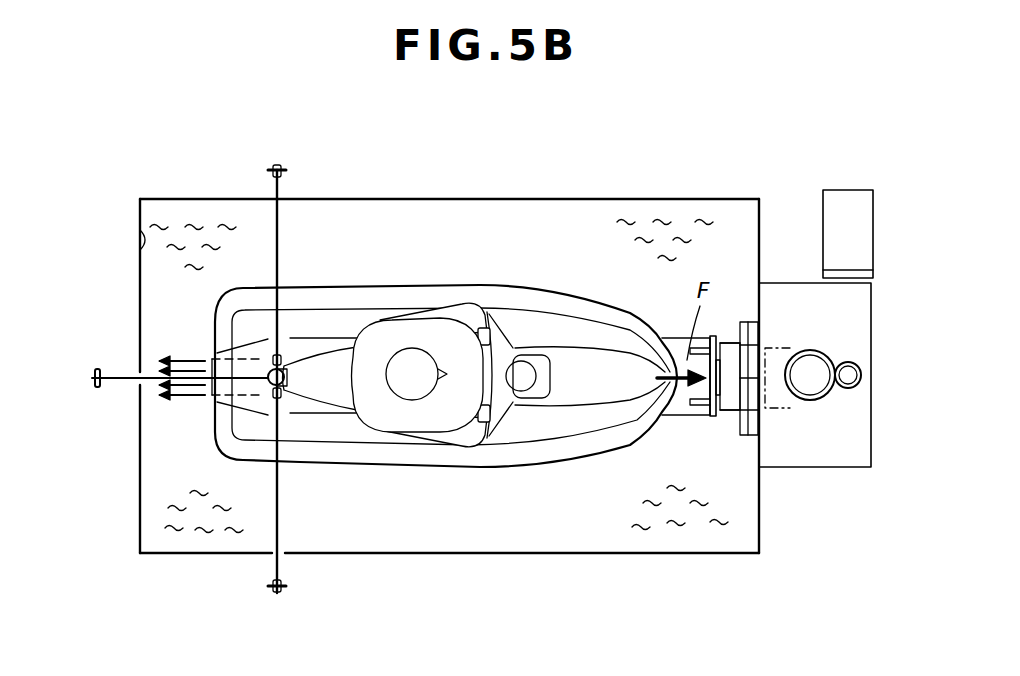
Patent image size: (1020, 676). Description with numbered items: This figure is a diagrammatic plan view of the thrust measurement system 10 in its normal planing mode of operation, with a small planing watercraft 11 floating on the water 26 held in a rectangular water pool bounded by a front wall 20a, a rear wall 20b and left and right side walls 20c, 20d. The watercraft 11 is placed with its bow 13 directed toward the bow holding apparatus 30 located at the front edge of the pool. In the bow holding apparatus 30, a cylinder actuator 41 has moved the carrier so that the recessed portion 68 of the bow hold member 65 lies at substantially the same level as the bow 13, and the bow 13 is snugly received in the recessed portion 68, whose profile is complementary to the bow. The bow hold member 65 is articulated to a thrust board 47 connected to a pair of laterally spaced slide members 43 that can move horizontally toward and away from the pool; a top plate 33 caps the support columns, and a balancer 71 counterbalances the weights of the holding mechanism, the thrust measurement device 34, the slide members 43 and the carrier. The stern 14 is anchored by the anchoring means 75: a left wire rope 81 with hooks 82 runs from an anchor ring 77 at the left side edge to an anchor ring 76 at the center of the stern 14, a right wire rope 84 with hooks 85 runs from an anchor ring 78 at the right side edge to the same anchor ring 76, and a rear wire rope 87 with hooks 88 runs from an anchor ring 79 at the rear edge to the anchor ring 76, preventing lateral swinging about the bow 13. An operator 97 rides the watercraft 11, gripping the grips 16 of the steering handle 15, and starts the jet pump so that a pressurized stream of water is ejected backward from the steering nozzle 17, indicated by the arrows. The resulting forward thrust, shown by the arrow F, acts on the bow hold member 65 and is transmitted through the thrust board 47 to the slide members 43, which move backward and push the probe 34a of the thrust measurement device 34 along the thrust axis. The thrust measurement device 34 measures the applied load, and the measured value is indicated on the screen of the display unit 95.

The thrust measurement system 10 is at (676, 145).
The small planing watercraft 11 is at (572, 292).
The bow 13 is at (632, 345).
The stern 14 is at (247, 325).
The steering handle 15 is at (494, 370).
The grips 16 is at (495, 322).
The steering nozzle 17 is at (262, 395).
The front wall 20a is at (759, 227).
The rear wall 20b is at (140, 230).
The left side wall 20c is at (512, 200).
The right side wall 20d is at (562, 548).
The water 26 is at (468, 218).
The bow holding apparatus 30 is at (821, 152).
The top plate 33 is at (848, 440).
The thrust measurement device 34 is at (797, 445).
The probe 34a is at (724, 411).
The cylinder actuator 41 is at (849, 370).
The slide members 43 is at (753, 330).
The thrust board 47 is at (735, 340).
The bow hold member 65 is at (690, 418).
The recessed portion 68 is at (648, 405).
The balancer 71 is at (808, 372).
The anchoring means 75 is at (282, 147).
The anchor ring 76 is at (276, 392).
The anchor ring 77 is at (282, 170).
The anchor ring 78 is at (285, 591).
The anchor ring 79 is at (97, 388).
The left wire rope 81 is at (278, 272).
The hooks 82 is at (283, 178).
The right wire rope 84 is at (279, 545).
The hooks 85 is at (286, 392).
The rear wire rope 87 is at (110, 370).
The hooks 88 is at (266, 373).
The display unit 95 is at (845, 190).
The operator 97 is at (395, 322).